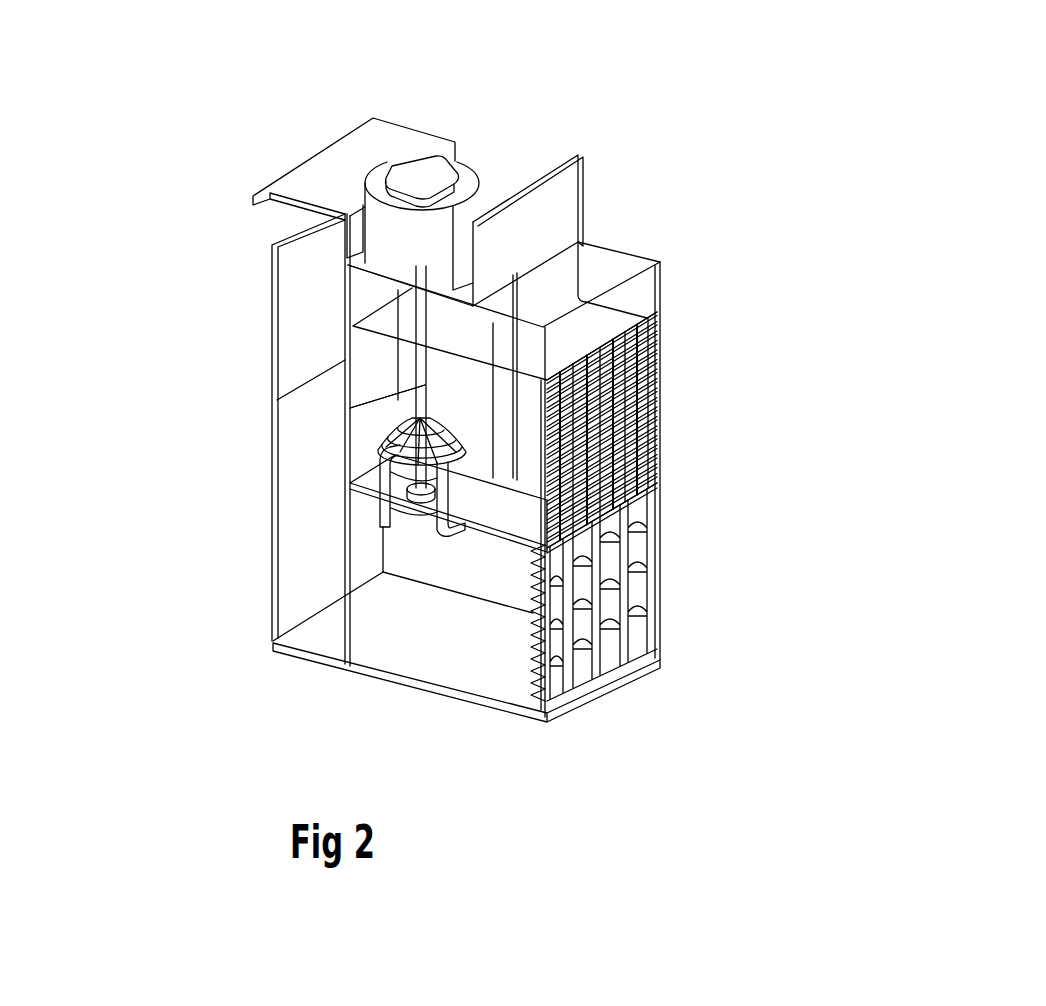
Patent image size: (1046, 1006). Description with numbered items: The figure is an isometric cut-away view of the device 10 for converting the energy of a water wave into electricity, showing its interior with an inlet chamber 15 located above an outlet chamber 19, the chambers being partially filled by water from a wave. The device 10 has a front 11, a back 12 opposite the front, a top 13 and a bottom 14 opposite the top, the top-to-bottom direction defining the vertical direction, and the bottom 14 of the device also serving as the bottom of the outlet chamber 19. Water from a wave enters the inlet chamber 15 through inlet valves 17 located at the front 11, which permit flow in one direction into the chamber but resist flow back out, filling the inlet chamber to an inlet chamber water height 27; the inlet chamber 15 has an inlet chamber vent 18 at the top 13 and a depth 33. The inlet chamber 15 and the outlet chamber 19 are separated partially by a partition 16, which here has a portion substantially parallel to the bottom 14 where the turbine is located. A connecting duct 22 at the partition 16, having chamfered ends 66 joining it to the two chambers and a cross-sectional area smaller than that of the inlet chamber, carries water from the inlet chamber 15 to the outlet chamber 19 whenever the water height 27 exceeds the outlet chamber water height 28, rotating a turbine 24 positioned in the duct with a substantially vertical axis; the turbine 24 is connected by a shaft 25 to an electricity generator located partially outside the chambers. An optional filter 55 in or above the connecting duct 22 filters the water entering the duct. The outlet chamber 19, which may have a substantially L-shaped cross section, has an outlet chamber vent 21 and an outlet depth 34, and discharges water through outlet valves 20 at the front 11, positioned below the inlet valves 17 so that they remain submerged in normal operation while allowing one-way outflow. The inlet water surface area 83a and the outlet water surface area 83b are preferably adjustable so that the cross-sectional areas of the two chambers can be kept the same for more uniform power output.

The device 10 is at (588, 98).
The front 11 is at (727, 425).
The back 12 is at (210, 355).
The top 13 is at (420, 112).
The bottom 14 is at (437, 768).
The inlet chamber 15 is at (612, 522).
The partition 16 is at (497, 537).
The inlet valves 17 is at (662, 378).
The inlet chamber vent 18 is at (605, 268).
The outlet chamber 19 is at (415, 640).
The outlet valves 20 is at (638, 628).
The outlet chamber vent 21 is at (303, 255).
The connecting duct 22 is at (352, 490).
The turbine 24 is at (412, 540).
The shaft 25 is at (350, 408).
The inlet chamber water height 27 is at (362, 343).
The outlet chamber water height 28 is at (317, 413).
The depth 33 is at (547, 770).
The outlet depth 34 is at (350, 710).
The filter 55 is at (437, 437).
The chamfered ends 66 is at (442, 463).
The inlet water surface area 83a is at (603, 298).
The outlet water surface area 83b is at (315, 390).